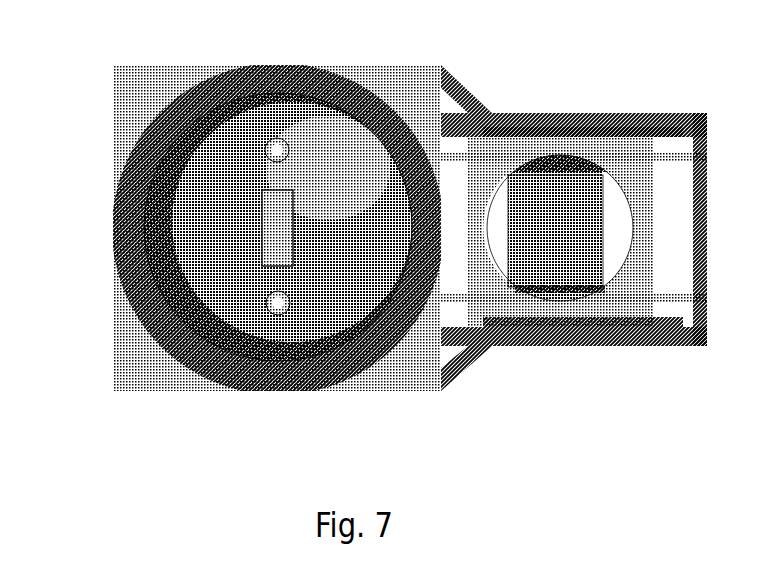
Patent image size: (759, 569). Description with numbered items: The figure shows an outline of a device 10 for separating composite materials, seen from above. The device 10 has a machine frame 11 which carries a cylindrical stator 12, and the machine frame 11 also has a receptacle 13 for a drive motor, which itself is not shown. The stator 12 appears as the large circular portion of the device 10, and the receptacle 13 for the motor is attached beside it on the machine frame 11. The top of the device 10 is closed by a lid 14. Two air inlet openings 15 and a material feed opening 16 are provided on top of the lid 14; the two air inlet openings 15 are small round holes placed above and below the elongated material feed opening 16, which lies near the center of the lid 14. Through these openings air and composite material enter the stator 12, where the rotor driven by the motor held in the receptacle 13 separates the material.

The device 10 is at (110, 435).
The machine frame 11 is at (537, 340).
The cylindrical stator 12 is at (388, 110).
The receptacle 13 is at (535, 150).
The lid 14 is at (318, 125).
The air inlet openings 15 is at (276, 146).
The material feed opening 16 is at (270, 213).